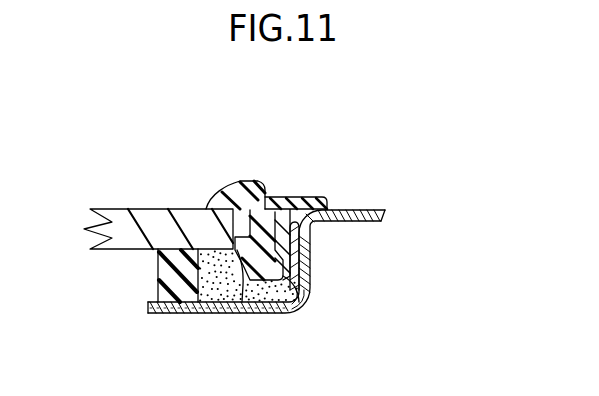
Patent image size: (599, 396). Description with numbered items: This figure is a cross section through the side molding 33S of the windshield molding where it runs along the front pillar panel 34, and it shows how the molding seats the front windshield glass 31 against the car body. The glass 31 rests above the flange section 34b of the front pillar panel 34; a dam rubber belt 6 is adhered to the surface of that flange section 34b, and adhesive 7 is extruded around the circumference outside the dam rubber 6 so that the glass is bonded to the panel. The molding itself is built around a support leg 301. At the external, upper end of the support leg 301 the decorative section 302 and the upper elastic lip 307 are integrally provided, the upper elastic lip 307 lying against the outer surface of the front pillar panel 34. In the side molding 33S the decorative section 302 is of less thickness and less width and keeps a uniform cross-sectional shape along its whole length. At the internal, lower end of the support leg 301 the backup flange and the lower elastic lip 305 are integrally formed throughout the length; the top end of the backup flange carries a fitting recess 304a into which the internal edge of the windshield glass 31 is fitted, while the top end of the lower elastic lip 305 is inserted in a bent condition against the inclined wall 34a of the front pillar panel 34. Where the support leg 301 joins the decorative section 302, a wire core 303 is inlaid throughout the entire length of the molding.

The front windshield glass 31 is at (138, 209).
The decorative section 302 is at (221, 189).
The side molding 33S is at (249, 177).
The wire core 303 is at (277, 199).
The upper elastic lip 307 is at (306, 203).
The front pillar panel 34 is at (359, 208).
The inclined wall 34a is at (314, 288).
The flange section 34b is at (194, 314).
The support leg 301 is at (274, 240).
The lower elastic lip 305 is at (304, 252).
The dam rubber belt 6 is at (173, 277).
The adhesive 7 is at (272, 300).
The fitting recess 304a is at (243, 302).